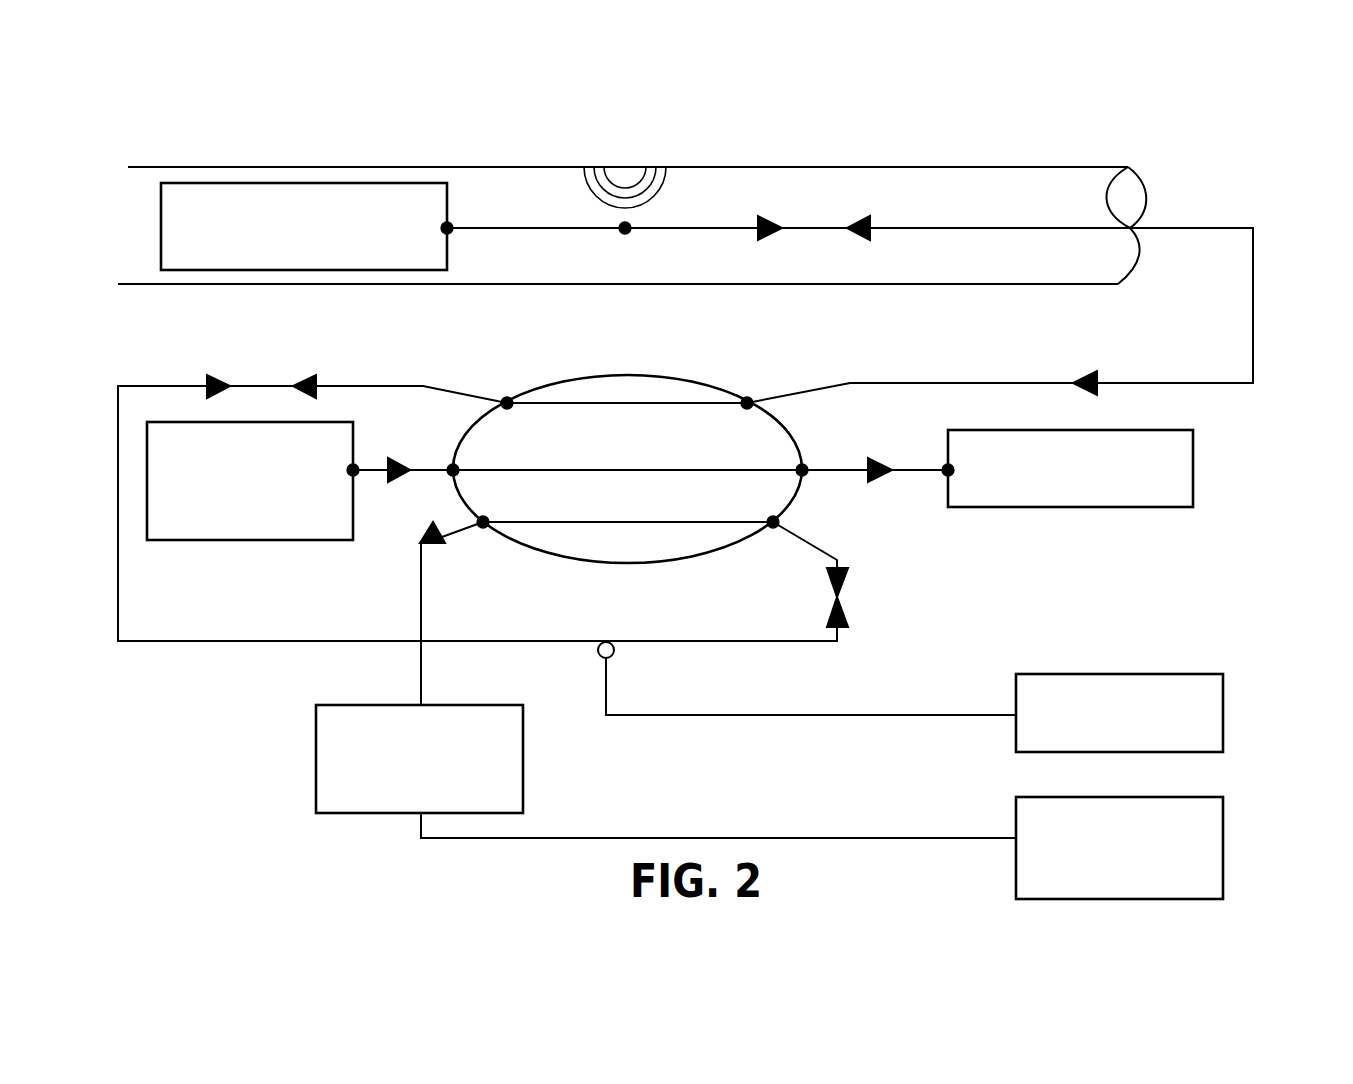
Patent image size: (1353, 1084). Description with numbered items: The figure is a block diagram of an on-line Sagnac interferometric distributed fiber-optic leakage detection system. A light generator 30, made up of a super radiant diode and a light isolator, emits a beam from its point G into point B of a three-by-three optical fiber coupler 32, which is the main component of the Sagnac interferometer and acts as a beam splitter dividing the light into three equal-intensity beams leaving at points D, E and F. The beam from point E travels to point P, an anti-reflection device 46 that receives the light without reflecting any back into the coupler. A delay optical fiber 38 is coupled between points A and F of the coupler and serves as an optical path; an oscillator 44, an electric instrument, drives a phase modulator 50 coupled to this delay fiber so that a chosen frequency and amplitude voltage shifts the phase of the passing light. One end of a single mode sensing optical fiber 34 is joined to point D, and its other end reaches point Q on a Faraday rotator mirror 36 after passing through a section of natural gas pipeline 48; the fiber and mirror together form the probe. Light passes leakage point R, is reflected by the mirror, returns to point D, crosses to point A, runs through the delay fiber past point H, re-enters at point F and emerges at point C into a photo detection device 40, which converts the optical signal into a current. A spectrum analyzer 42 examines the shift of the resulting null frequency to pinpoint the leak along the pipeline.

The light generator 30 is at (243, 541).
The 3*3 optical fiber coupler 32 is at (715, 385).
The sensing optical fiber 34 is at (1255, 353).
The Faraday rotator mirror 36 is at (218, 271).
The delay optical fiber 38 is at (257, 641).
The photo detection device 40 is at (377, 813).
The spectrum analyzer 42 is at (1223, 847).
The oscillator 44 is at (1225, 710).
The anti-reflection device 46 is at (1193, 448).
The natural gas pipeline 48 is at (892, 165).
The phase modulator 50 is at (597, 651).